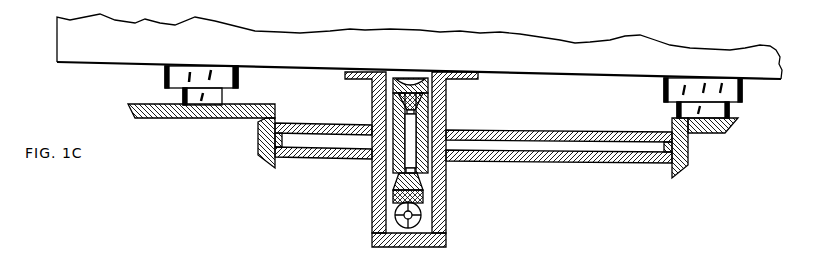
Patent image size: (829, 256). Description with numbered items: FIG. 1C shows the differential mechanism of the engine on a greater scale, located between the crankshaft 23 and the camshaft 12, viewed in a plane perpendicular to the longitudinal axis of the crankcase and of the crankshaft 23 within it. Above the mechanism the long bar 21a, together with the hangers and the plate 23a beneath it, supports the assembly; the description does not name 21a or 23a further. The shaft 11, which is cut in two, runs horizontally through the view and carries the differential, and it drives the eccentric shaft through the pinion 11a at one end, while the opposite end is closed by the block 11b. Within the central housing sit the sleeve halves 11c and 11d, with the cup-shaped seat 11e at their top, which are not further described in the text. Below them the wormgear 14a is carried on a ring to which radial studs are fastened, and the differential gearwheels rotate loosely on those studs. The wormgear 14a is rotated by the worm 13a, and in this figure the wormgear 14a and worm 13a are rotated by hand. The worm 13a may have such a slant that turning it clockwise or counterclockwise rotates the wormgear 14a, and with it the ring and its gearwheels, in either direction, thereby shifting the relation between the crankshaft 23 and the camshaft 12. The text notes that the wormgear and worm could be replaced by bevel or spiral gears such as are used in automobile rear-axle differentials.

The guide rail / support bar 21a is at (54, 40).
The crankshaft 23 is at (731, 111).
The bracket plate 23a is at (729, 131).
The camshaft 12 is at (126, 108).
The shaft 11 is at (320, 138).
The pinion 11a is at (263, 161).
The right end block 11b is at (691, 166).
The right sleeve half 11c is at (429, 119).
The left sleeve half 11d is at (392, 118).
The cup / seat element 11e is at (419, 105).
The wormgear 14a is at (426, 196).
The worm 13a is at (425, 213).